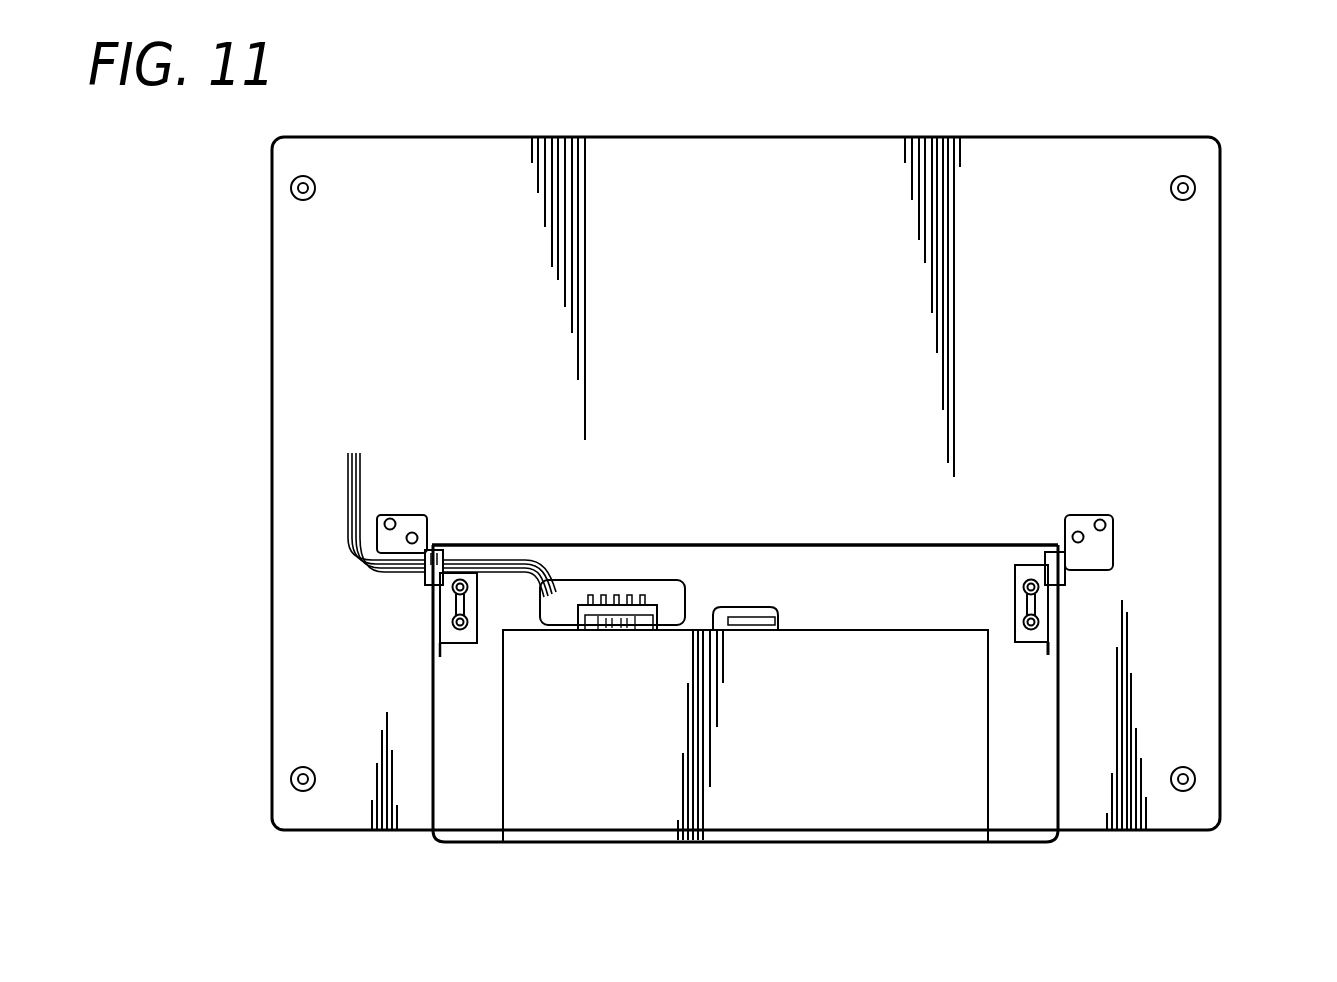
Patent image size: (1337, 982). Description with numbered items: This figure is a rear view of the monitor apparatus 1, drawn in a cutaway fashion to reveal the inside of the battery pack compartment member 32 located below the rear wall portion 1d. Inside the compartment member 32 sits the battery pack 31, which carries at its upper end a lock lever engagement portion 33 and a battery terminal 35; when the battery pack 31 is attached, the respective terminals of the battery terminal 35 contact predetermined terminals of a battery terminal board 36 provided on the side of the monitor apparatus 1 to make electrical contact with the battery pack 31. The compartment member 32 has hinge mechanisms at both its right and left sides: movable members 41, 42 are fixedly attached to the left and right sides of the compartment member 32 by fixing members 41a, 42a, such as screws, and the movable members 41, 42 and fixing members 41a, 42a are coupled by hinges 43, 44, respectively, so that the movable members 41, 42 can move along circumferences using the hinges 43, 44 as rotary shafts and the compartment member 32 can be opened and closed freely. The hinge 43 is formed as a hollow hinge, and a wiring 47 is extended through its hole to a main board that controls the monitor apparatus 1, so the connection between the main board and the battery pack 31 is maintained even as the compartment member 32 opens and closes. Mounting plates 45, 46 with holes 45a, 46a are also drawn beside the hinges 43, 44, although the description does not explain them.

The monitor apparatus 1 is at (1062, 135).
The rear wall portion 1d is at (1180, 297).
The battery pack 31 is at (775, 815).
The battery pack compartment member 32 is at (1027, 812).
The lock lever engagement portion 33 is at (755, 633).
The battery terminal 35 is at (630, 633).
The battery terminal board 36 is at (627, 580).
The movable member 41 is at (326, 640).
The fixing member 41a is at (473, 590).
The movable member 42 is at (1107, 612).
The fixing member 42a is at (1018, 608).
The hinge 43 is at (423, 583).
The hinge 44 is at (1065, 582).
The left mounting plate 45 is at (422, 459).
The hole of left mounting plate 45a is at (413, 532).
The right mounting plate 46 is at (1193, 493).
The hole of right mounting plate 46a is at (1100, 520).
The wiring 47 is at (347, 512).